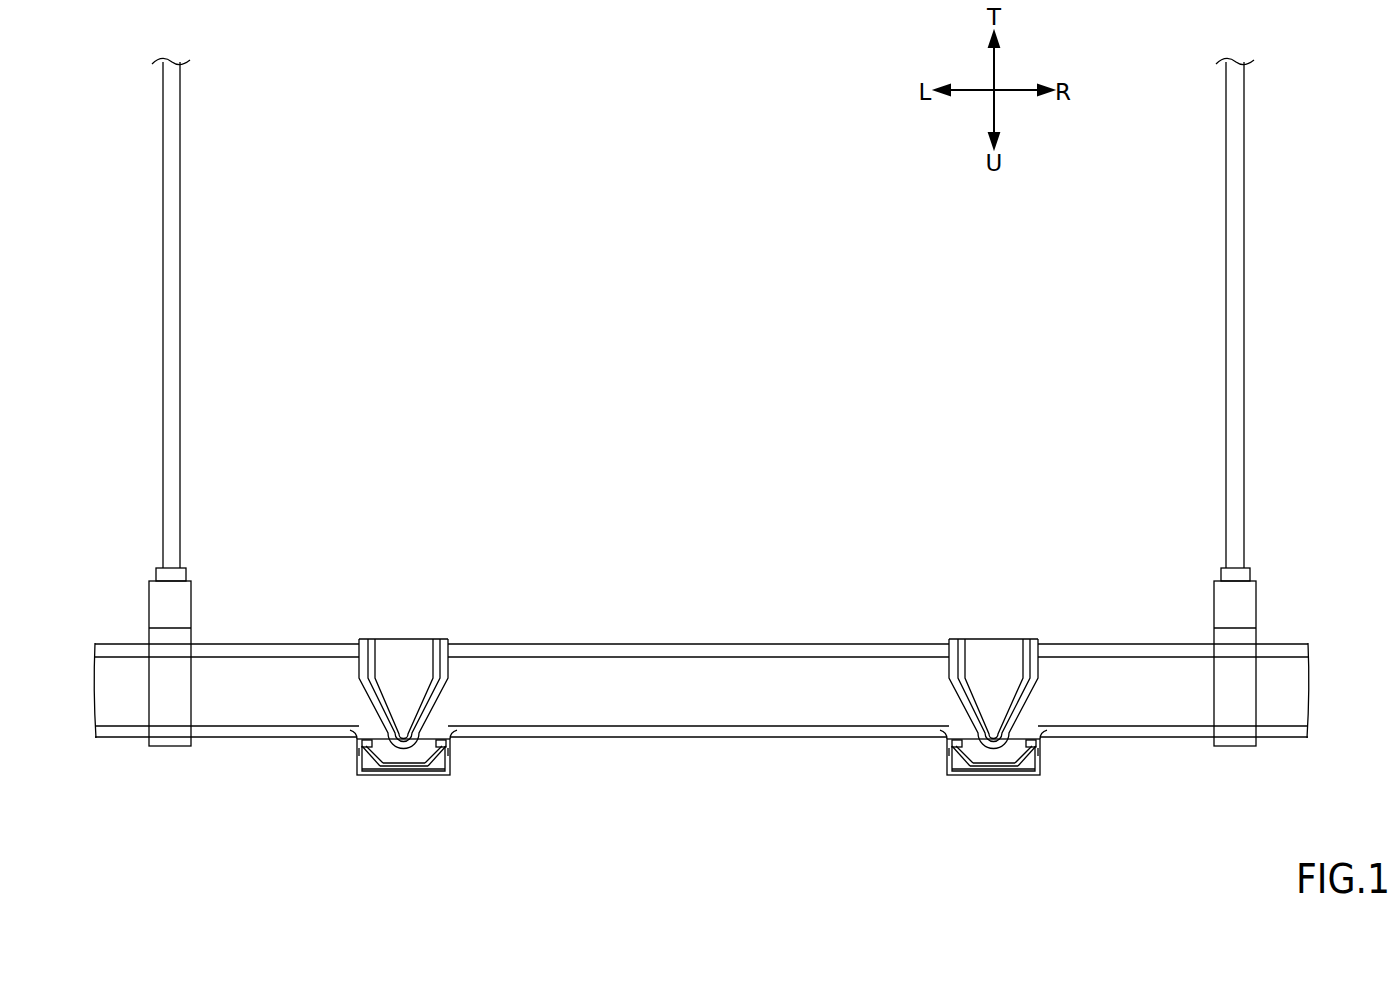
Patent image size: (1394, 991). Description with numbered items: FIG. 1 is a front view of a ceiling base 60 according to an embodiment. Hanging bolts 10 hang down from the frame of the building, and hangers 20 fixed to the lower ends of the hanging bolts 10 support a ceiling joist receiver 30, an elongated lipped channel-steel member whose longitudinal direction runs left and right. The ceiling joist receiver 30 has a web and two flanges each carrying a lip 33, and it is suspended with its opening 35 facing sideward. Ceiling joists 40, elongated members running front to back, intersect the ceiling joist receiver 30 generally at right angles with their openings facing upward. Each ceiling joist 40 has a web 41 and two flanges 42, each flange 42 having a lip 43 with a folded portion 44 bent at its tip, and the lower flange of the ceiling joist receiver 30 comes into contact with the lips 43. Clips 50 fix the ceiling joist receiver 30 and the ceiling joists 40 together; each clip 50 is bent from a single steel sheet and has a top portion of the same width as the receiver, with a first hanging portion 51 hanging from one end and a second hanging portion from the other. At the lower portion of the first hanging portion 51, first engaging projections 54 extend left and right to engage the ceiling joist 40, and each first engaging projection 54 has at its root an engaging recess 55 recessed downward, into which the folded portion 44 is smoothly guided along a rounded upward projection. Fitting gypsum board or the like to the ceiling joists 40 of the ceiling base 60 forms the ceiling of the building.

The hanging bolt 10 is at (181, 293).
The hanger 20 is at (180, 638).
The ceiling joist receiver 30 is at (650, 643).
The lip 33 is at (710, 652).
The opening 35 is at (775, 712).
The ceiling joist 40 is at (346, 794).
The web 41 is at (446, 772).
The flange 42 is at (368, 762).
The lip 43 is at (362, 742).
The folded portion 44 is at (360, 740).
The clip 50 is at (419, 625).
The first hanging portion 51 is at (393, 650).
The first engaging projection 54 is at (358, 750).
The engaging recess 55 is at (376, 776).
The ceiling base 60 is at (645, 806).